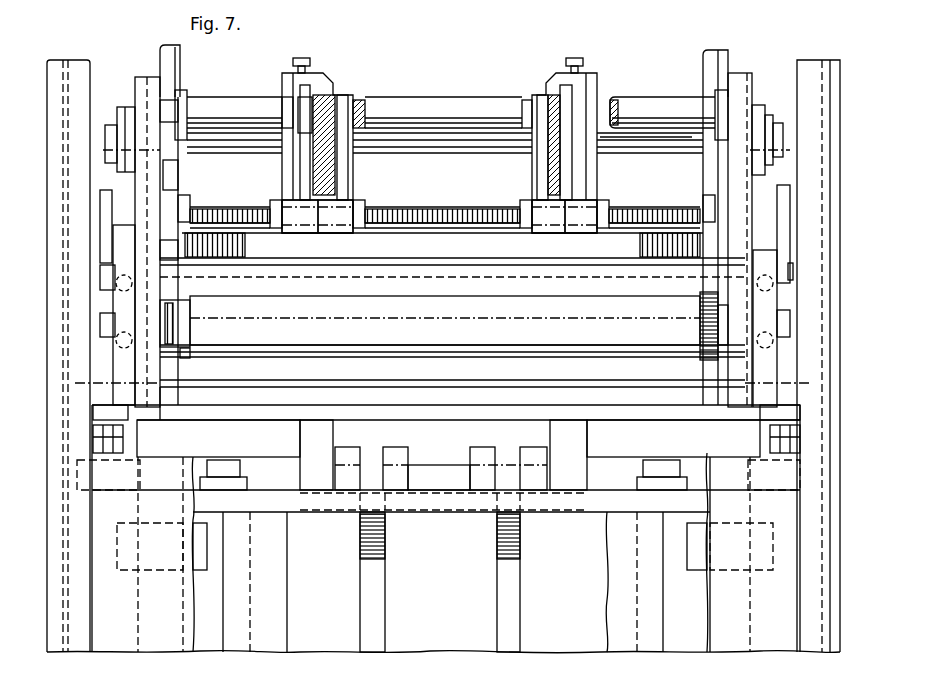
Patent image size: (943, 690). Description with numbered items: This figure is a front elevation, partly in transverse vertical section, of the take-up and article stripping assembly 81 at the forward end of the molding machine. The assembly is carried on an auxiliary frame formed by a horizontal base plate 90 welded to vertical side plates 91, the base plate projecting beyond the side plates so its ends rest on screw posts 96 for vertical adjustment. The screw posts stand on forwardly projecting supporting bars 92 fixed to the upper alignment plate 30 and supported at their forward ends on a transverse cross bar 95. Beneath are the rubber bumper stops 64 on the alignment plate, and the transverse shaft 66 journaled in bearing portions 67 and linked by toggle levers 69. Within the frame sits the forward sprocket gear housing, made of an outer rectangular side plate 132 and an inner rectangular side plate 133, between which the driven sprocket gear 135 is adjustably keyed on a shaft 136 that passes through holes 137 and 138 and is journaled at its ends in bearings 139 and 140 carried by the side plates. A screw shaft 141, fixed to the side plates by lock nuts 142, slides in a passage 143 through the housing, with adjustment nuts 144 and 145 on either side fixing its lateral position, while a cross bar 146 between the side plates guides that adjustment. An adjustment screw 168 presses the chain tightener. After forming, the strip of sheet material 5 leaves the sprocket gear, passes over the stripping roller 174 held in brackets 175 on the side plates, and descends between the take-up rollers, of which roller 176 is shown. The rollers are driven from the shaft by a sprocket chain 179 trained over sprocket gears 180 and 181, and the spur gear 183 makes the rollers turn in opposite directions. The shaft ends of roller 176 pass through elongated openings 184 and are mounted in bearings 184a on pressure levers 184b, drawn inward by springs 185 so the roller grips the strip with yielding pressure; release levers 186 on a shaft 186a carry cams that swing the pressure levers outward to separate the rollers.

The strip of thermoplastic sheet material 5 is at (470, 96).
The upper alignment plate 30 is at (296, 499).
The bumper stops 64 is at (227, 468).
The transverse shaft 66 is at (445, 471).
The bearing portions 67 is at (333, 432).
The toggle levers 69 is at (378, 568).
The take-up and article stripping assembly 81 is at (400, 55).
The horizontal base plate 90 is at (462, 390).
The vertical side plates 91 is at (143, 82).
The supporting bars 92 is at (130, 477).
The transverse cross bar 95 is at (207, 503).
The screw posts 96 is at (125, 437).
The outer rectangular side plate 132 is at (286, 174).
The inner rectangular side plate 133 is at (350, 170).
The driven sprocket gear 135 is at (330, 177).
The shaft 136 is at (437, 149).
The hole 137 is at (289, 128).
The hole 138 is at (362, 118).
The bearing 139 is at (118, 124).
The bearing 140 is at (768, 120).
The screw shaft 141 is at (428, 225).
The lock nuts 142 is at (185, 198).
The passage 143 is at (313, 230).
The adjustment nut 144 is at (278, 233).
The adjustment nut 145 is at (357, 228).
The cross bar 146 is at (458, 266).
The adjustment screw 168 is at (299, 63).
The stripping roller 174 is at (223, 108).
The brackets 175 is at (177, 98).
The take-up roller 176 is at (573, 299).
The sprocket chain 179 is at (445, 316).
The sprocket gear 180 is at (181, 182).
The sprocket gear 181 is at (184, 358).
The spur gear 183 is at (700, 320).
The elongated openings 184 is at (191, 318).
The bearing 184a is at (110, 344).
The pressure lever 184b is at (110, 305).
The spring 185 is at (95, 284).
The release levers 186 is at (103, 204).
The shaft 186a is at (368, 274).